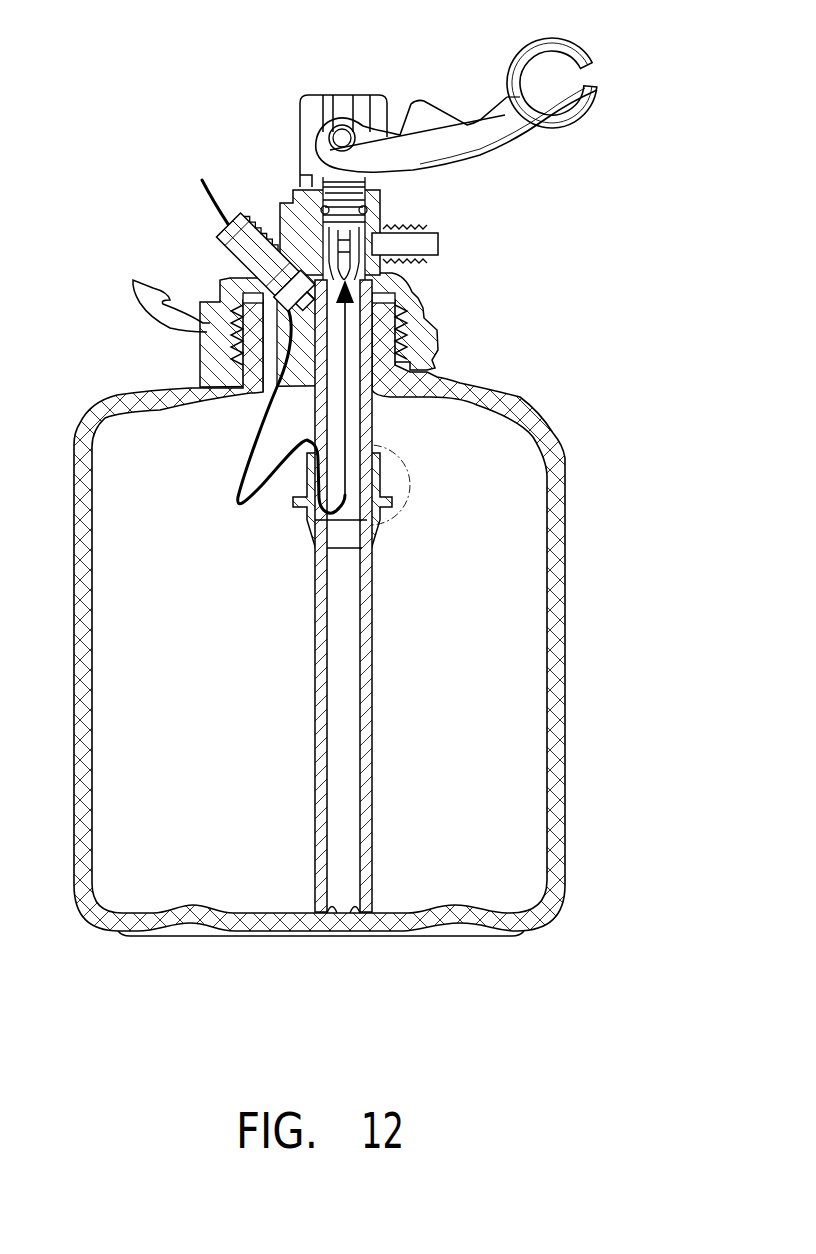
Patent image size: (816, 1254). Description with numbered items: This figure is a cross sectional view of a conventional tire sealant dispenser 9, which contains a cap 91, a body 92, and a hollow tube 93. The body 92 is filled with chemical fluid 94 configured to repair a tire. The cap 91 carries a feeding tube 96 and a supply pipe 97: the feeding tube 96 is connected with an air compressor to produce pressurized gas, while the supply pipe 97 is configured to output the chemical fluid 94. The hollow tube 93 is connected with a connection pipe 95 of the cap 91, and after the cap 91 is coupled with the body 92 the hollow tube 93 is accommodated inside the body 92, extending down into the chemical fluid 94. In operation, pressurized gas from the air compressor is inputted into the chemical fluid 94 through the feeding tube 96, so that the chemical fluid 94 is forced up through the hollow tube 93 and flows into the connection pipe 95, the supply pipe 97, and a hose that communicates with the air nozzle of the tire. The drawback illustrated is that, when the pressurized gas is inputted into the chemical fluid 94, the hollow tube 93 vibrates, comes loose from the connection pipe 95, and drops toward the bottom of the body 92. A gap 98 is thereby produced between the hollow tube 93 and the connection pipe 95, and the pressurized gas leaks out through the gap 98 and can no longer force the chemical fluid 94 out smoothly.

The tire sealant dispenser 9 is at (359, 477).
The cap 91 is at (421, 333).
The body 92 is at (560, 503).
The hollow tube 93 is at (370, 590).
The chemical fluid 94 is at (523, 807).
The connection pipe 95 is at (365, 410).
The feeding tube 96 is at (213, 255).
The supply pipe 97 is at (423, 233).
The gap 98 is at (372, 430).